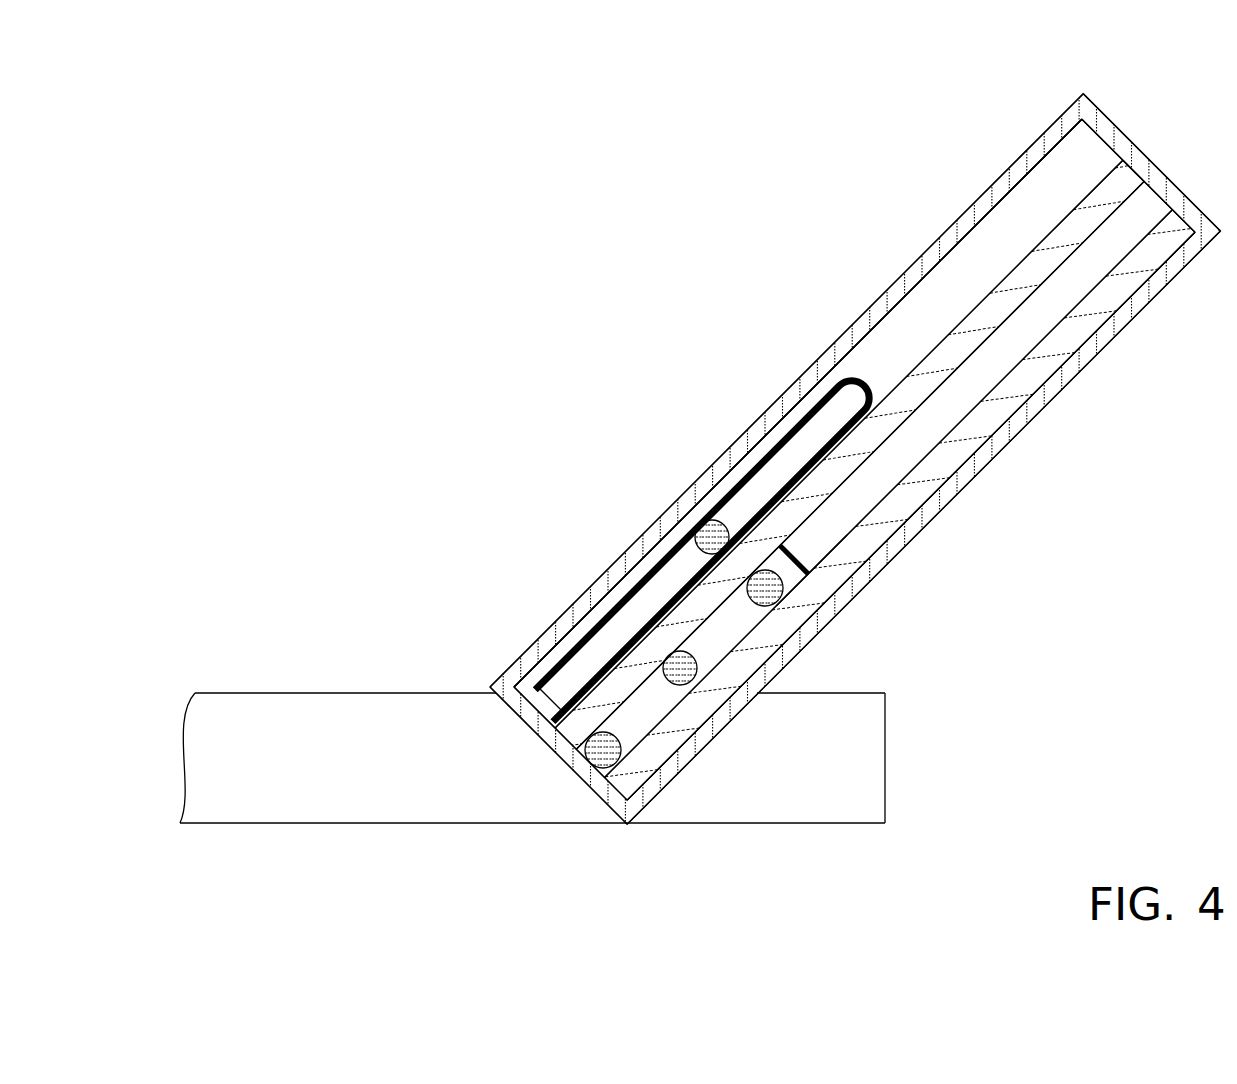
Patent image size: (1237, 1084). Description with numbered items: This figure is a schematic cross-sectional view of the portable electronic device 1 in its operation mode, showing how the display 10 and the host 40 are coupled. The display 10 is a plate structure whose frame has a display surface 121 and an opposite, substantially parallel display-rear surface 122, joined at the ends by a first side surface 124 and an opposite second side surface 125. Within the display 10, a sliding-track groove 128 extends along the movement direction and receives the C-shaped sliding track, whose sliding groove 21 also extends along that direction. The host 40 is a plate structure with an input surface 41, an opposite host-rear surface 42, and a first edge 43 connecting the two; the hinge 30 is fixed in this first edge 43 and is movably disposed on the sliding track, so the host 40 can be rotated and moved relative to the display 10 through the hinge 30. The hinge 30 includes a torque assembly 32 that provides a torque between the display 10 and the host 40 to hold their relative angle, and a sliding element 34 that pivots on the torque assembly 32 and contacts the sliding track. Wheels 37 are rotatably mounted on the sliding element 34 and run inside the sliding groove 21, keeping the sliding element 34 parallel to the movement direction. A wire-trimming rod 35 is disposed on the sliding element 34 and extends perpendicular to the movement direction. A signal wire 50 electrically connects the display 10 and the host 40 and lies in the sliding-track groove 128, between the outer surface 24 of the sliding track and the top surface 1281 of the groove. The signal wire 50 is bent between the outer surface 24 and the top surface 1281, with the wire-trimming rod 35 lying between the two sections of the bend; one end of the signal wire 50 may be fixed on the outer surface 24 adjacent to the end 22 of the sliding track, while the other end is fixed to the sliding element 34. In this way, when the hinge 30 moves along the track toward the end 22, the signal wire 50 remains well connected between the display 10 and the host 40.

The portable electronic device 1 is at (527, 126).
The display 10 is at (809, 201).
The sliding groove 21 is at (932, 420).
The end 22 is at (1125, 171).
The outer surface 24 is at (918, 372).
The hinge 30 is at (809, 561).
The torque assembly 32 is at (603, 752).
The sliding element 34 is at (807, 572).
The wire-trimming rod 35 is at (712, 537).
The wheels 37 is at (770, 590).
The host 40 is at (573, 722).
The input surface 41 is at (295, 690).
The host-rear surface 42 is at (295, 826).
The first edge 43 is at (888, 760).
The signal wire 50 is at (770, 455).
The display surface 121 is at (815, 375).
The display-rear surface 122 is at (1068, 362).
The first side surface 124 is at (540, 717).
The second side surface 125 is at (1152, 168).
The sliding-track groove 128 is at (955, 290).
The top surface 1281 is at (985, 207).